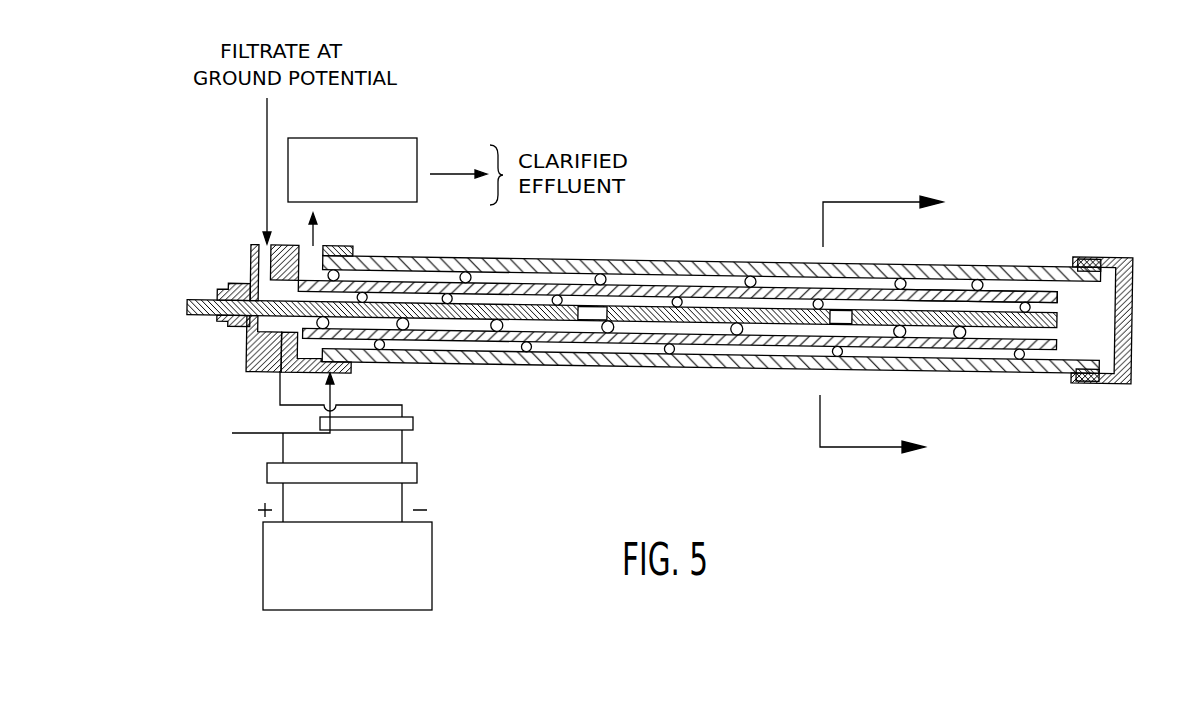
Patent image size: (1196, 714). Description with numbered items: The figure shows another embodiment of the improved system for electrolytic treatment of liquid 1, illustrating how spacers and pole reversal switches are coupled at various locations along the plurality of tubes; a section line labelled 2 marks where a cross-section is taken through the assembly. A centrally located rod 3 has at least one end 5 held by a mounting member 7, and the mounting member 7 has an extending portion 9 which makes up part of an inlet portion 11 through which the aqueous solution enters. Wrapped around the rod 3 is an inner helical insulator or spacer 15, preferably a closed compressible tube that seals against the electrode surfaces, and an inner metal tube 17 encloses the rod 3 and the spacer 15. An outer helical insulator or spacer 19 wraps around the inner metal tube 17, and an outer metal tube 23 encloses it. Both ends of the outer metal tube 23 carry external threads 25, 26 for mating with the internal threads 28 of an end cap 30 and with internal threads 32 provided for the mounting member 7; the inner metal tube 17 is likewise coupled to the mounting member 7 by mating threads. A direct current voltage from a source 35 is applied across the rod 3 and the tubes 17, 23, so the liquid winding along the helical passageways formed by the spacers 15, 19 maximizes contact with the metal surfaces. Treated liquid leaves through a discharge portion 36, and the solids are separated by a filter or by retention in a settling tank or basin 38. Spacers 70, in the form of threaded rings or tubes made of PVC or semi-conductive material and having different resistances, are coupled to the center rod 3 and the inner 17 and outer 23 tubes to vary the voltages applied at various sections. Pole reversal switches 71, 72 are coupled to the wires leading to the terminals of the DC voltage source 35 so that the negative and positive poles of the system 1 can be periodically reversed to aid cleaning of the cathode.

The improved system for electrolytic treatment of liquid 1 is at (731, 140).
The section line 2- 2 is at (892, 328).
The centrally located rod 3 is at (1043, 326).
The end of rod 5 is at (232, 433).
The mounting member 7 is at (250, 289).
The extending portion 9 is at (270, 249).
The inlet portion 11 is at (254, 246).
The inner helical insulator or spacer 15 is at (730, 333).
The inner metal tube 17 is at (1008, 292).
The outer helical insulator or spacer 19 is at (610, 283).
The outer metal tube 23 is at (722, 268).
The external threads 25 is at (1093, 266).
The external threads 26 is at (356, 258).
The internal threads 28 is at (1098, 382).
The end cap 30 is at (1128, 258).
The internal threads 32 is at (338, 248).
The DC voltage source 35 is at (420, 595).
The discharge portion 36 is at (302, 232).
The settling tank or basin 38 is at (410, 162).
The spacers 70 is at (640, 342).
The pole reversal switch 71 is at (431, 473).
The pole reversal switch 72 is at (431, 423).